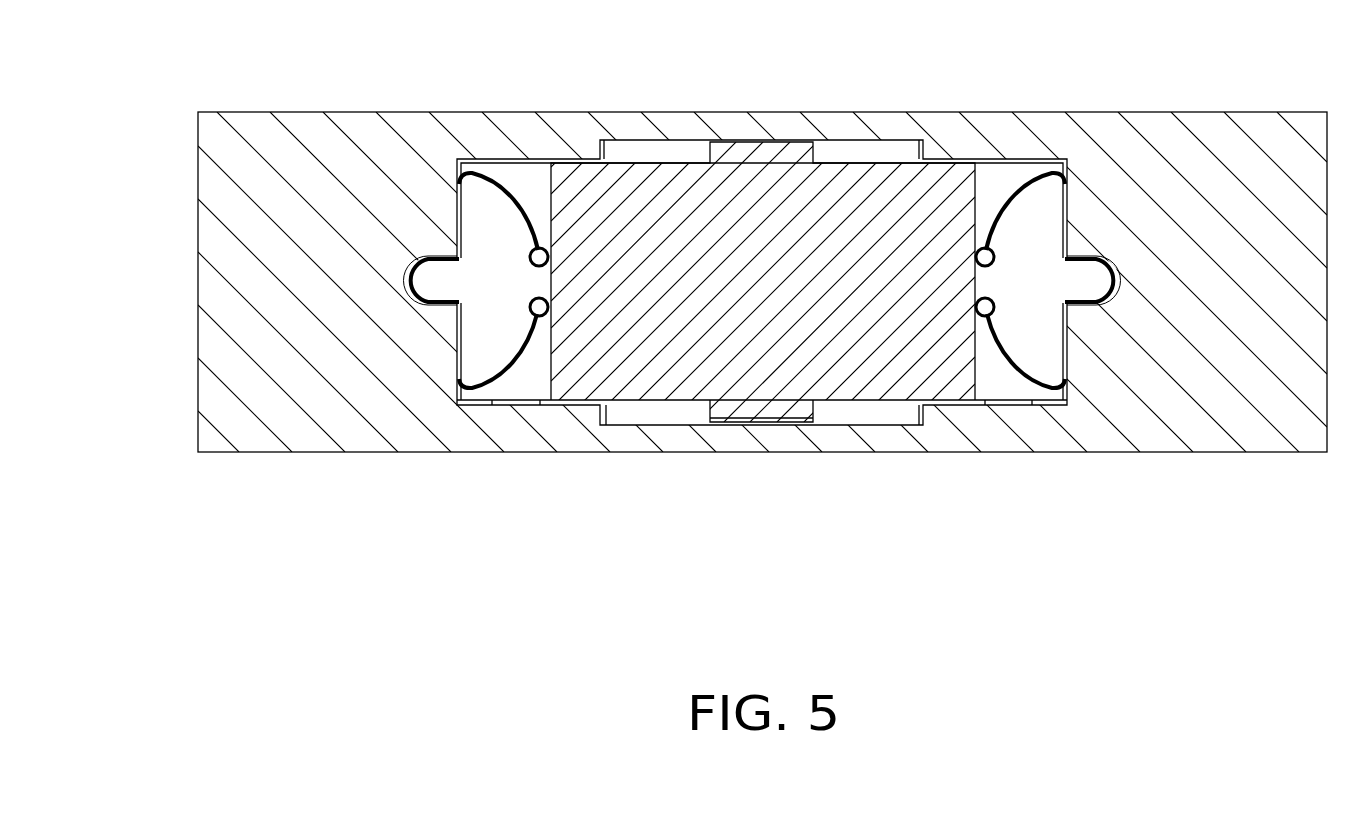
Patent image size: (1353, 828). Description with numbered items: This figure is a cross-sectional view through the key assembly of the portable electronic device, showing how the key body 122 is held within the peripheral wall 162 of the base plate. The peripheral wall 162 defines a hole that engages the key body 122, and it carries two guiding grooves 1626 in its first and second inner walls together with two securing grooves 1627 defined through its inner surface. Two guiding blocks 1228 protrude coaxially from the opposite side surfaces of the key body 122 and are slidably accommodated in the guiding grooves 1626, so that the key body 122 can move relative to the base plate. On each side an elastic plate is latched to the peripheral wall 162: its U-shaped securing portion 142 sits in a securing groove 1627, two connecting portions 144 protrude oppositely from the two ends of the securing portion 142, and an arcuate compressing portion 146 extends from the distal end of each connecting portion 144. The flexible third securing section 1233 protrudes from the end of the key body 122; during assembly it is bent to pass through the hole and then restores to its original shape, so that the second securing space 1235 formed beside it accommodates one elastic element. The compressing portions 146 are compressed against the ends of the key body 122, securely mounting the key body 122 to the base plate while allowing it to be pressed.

The peripheral wall 162 is at (1180, 150).
The securing grooves 1627 is at (403, 277).
The securing portion 142 is at (405, 288).
The connecting portions 144 is at (457, 338).
The third securing section 1233 is at (486, 356).
The compressing portions 146 is at (517, 365).
The key body 122 is at (587, 307).
The guiding blocks 1228 is at (770, 413).
The guiding grooves 1626 is at (877, 415).
The second securing space 1235 is at (1000, 383).